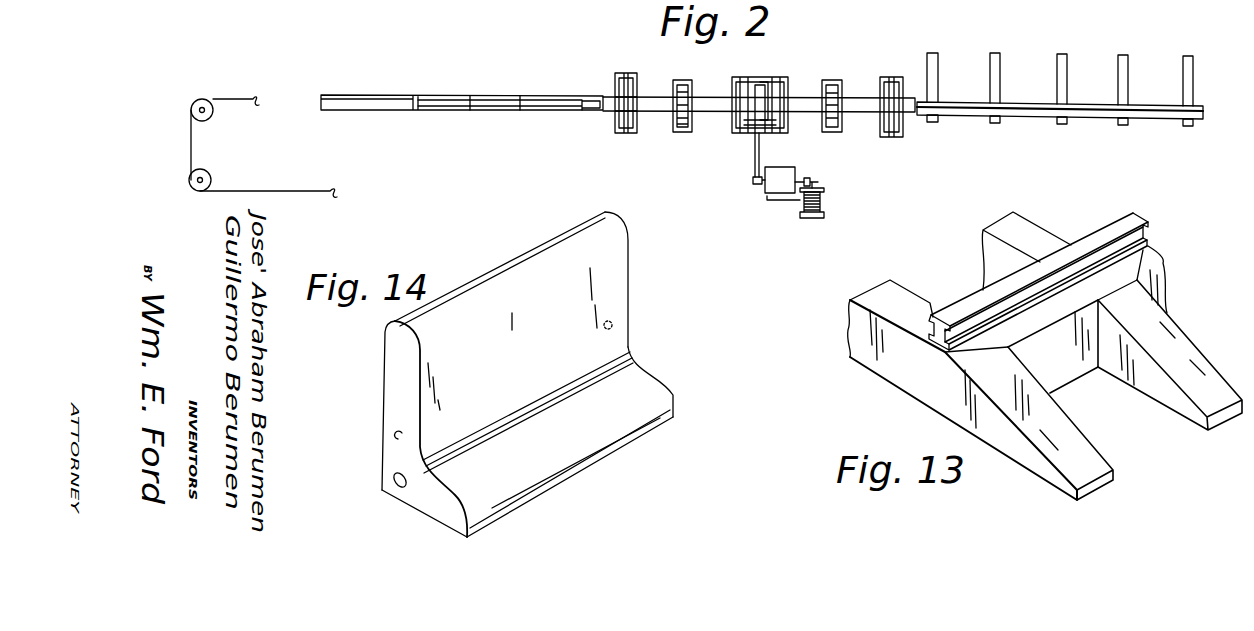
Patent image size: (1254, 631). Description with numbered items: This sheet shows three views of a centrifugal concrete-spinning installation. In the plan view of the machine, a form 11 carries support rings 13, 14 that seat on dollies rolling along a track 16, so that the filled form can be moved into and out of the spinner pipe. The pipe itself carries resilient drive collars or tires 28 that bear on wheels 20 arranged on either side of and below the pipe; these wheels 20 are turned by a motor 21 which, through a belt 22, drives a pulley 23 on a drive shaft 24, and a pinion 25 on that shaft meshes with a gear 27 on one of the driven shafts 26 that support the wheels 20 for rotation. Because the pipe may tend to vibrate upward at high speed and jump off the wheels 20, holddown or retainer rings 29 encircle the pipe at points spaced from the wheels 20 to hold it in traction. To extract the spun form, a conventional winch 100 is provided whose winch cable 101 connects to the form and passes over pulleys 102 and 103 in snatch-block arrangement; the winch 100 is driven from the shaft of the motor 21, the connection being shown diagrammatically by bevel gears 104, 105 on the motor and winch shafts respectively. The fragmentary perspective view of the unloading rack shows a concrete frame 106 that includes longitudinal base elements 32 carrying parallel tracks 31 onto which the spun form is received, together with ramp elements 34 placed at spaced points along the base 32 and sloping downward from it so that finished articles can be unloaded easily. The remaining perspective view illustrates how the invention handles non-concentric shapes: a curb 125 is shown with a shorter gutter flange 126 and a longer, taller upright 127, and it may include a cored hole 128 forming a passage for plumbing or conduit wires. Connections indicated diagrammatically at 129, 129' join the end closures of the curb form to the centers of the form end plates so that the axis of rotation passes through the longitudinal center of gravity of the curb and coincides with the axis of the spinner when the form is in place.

In FIG. 2, the winch cable 101 is at (245, 97).
In FIG. 2, the pulley 102 is at (195, 178).
In FIG. 2, the pulley 103 is at (197, 104).
In FIG. 2, the track 16 is at (365, 95).
In FIG. 2, the form 11 is at (436, 97).
In FIG. 2, the support ring 13 is at (520, 96).
In FIG. 2, the support ring 14 is at (582, 97).
In FIG. 2, the wheel 20 is at (622, 120).
In FIG. 2, the tire 28 is at (618, 95).
In FIG. 2, the retainer ring 29 is at (682, 132).
In FIG. 2, the gear 27 is at (762, 95).
In FIG. 2, the driven shaft 26 is at (786, 115).
In FIG. 2, the pinion 25 is at (752, 132).
In FIG. 2, the pulley 23 is at (755, 136).
In FIG. 2, the belt 22 is at (754, 183).
In FIG. 2, the drive shaft 24 is at (776, 132).
In FIG. 2, the motor 21 is at (788, 170).
In FIG. 2, the bevel gear 104 is at (818, 180).
In FIG. 2, the bevel gear 105 is at (824, 190).
In FIG. 2, the winch 100 is at (826, 214).
In FIG. 14, the curb 125 is at (556, 307).
In FIG. 14, the gutter flange 126 is at (640, 383).
In FIG. 14, the upright 127 is at (397, 388).
In FIG. 14, the cored hole 128 is at (393, 480).
In FIG. 14, the connection 129 is at (362, 439).
In FIG. 14, the connection 129' is at (642, 320).
In FIG. 13, the track 31 is at (1150, 220).
In FIG. 13, the base 32 is at (1070, 372).
In FIG. 13, the ramp element 34 is at (1185, 337).
In FIG. 13, the concrete frame 106 is at (912, 380).